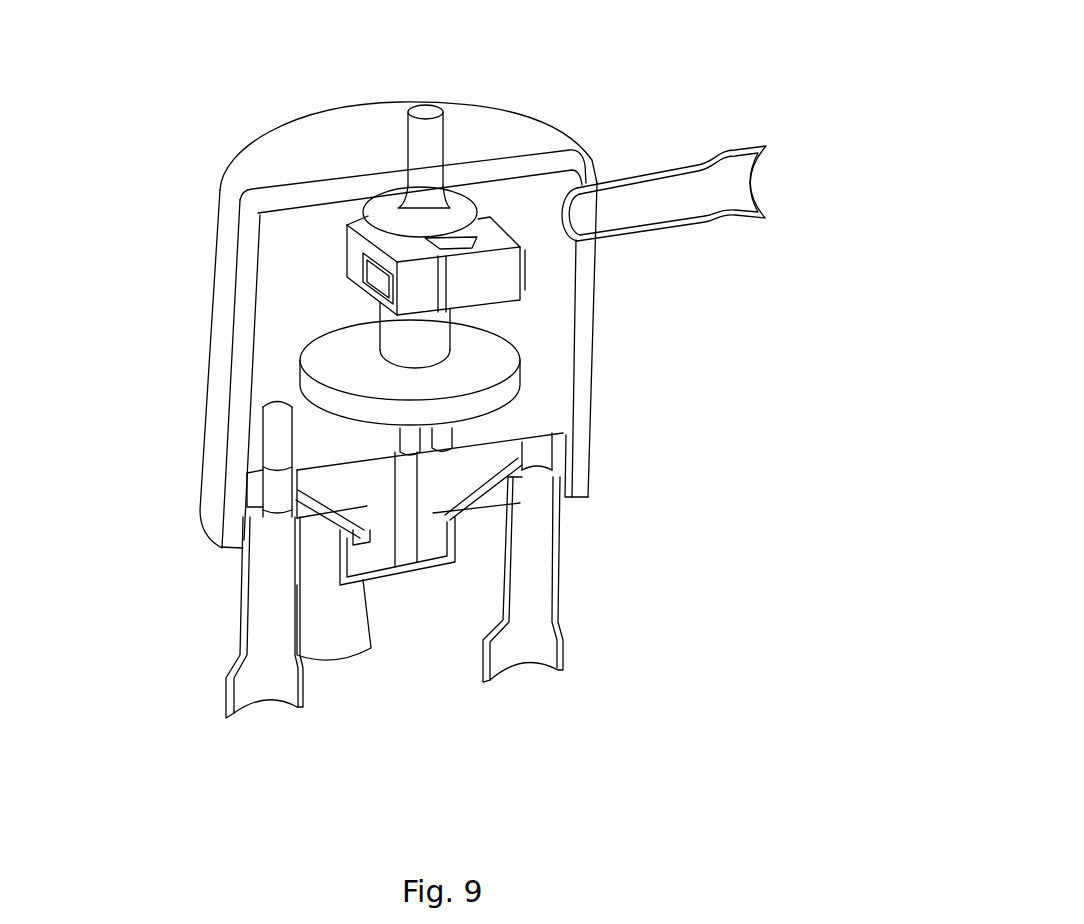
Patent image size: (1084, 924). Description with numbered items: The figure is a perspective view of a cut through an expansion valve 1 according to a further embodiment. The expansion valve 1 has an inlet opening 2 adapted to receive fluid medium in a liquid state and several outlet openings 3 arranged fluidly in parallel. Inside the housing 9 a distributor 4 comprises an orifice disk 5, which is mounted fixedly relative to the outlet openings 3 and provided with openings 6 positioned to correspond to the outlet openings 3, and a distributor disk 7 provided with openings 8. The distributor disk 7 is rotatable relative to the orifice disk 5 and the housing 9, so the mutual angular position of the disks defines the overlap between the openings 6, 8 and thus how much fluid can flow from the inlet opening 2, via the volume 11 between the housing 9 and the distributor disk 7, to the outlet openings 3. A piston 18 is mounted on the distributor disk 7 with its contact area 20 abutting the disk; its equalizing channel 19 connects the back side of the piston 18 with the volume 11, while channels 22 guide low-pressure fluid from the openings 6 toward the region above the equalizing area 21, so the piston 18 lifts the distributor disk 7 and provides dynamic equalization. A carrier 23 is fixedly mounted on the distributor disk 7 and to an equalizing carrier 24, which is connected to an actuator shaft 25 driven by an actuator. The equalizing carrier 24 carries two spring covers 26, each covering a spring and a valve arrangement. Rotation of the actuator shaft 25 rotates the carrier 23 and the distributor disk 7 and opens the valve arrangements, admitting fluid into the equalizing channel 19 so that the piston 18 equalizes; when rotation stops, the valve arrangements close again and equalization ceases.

The expansion valve 1 is at (695, 17).
The inlet opening 2 is at (590, 212).
The outlet openings 3 is at (258, 707).
The distributor 4 is at (597, 413).
The orifice disk 5 is at (335, 489).
The openings 6 is at (290, 505).
The distributor disk 7 is at (325, 440).
The openings 8 is at (285, 420).
The housing 9 is at (337, 123).
The volume 11 is at (282, 290).
The piston 18 is at (372, 553).
The equalizing channel 19 is at (402, 535).
The contact area 20 is at (431, 450).
The equalizing area 21 is at (364, 585).
The channels 22 is at (300, 490).
The carrier 23 is at (330, 358).
The equalizing carrier 24 is at (362, 232).
The actuator shaft 25 is at (420, 150).
The spring covers 26 is at (368, 278).